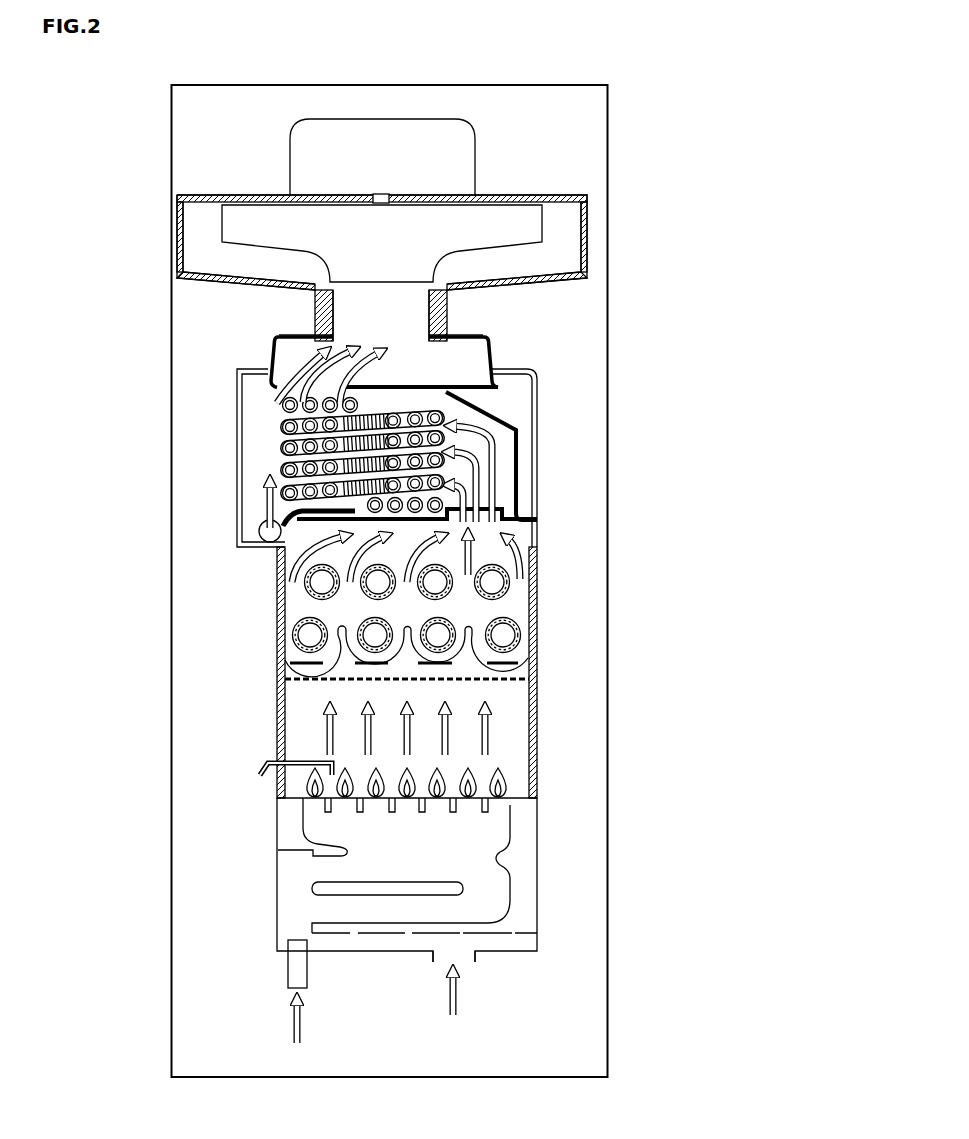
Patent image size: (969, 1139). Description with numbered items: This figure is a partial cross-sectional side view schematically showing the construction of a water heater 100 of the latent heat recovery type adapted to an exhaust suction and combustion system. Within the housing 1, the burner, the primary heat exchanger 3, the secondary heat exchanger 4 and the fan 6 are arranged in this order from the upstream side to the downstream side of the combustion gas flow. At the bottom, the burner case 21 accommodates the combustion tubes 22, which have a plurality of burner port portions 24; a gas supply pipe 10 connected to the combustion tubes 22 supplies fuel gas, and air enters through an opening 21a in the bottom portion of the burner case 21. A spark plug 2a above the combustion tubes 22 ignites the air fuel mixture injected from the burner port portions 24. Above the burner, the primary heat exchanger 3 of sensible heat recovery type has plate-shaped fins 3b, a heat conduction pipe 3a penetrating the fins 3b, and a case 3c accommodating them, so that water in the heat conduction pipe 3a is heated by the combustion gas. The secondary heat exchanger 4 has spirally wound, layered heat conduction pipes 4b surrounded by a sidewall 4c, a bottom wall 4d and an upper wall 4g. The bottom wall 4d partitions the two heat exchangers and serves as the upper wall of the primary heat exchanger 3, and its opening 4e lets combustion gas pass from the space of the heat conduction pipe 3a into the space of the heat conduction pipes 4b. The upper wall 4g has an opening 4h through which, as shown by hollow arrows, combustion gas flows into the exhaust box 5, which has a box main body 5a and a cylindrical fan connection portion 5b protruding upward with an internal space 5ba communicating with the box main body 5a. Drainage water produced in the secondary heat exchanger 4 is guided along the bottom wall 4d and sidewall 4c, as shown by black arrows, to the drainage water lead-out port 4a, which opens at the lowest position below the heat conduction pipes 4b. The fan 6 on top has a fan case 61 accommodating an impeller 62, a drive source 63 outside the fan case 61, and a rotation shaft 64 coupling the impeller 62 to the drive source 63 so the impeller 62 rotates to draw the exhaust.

The water heater 100 is at (640, 200).
The housing 1 is at (607, 265).
The spark plug 2a is at (322, 760).
The primary heat exchanger 3 is at (555, 589).
The heat conduction pipe 3a is at (520, 627).
The plate-shaped fins 3b is at (520, 652).
The case 3c is at (533, 608).
The secondary heat exchanger 4 is at (553, 416).
The drainage water lead-out port 4a is at (258, 533).
The heat conduction pipes 4b is at (285, 453).
The sidewall 4c is at (537, 472).
The bottom wall 4d is at (535, 500).
The opening 4e is at (487, 521).
The upper wall 4g is at (407, 391).
The opening 4h is at (270, 408).
The exhaust box 5 is at (512, 358).
The box main body 5a is at (450, 318).
The fan connection portion 5b is at (315, 318).
The internal space 5ba is at (405, 318).
The fan 6 is at (494, 180).
The fan case 61 is at (206, 195).
The impeller 62 is at (263, 223).
The drive source 63 is at (383, 143).
The rotation shaft 64 is at (377, 194).
The gas supply pipe 10 is at (293, 962).
The burner case 21 is at (396, 862).
The opening 21a is at (463, 960).
The combustion tubes 22 is at (508, 862).
The burner port portions 24 is at (498, 803).